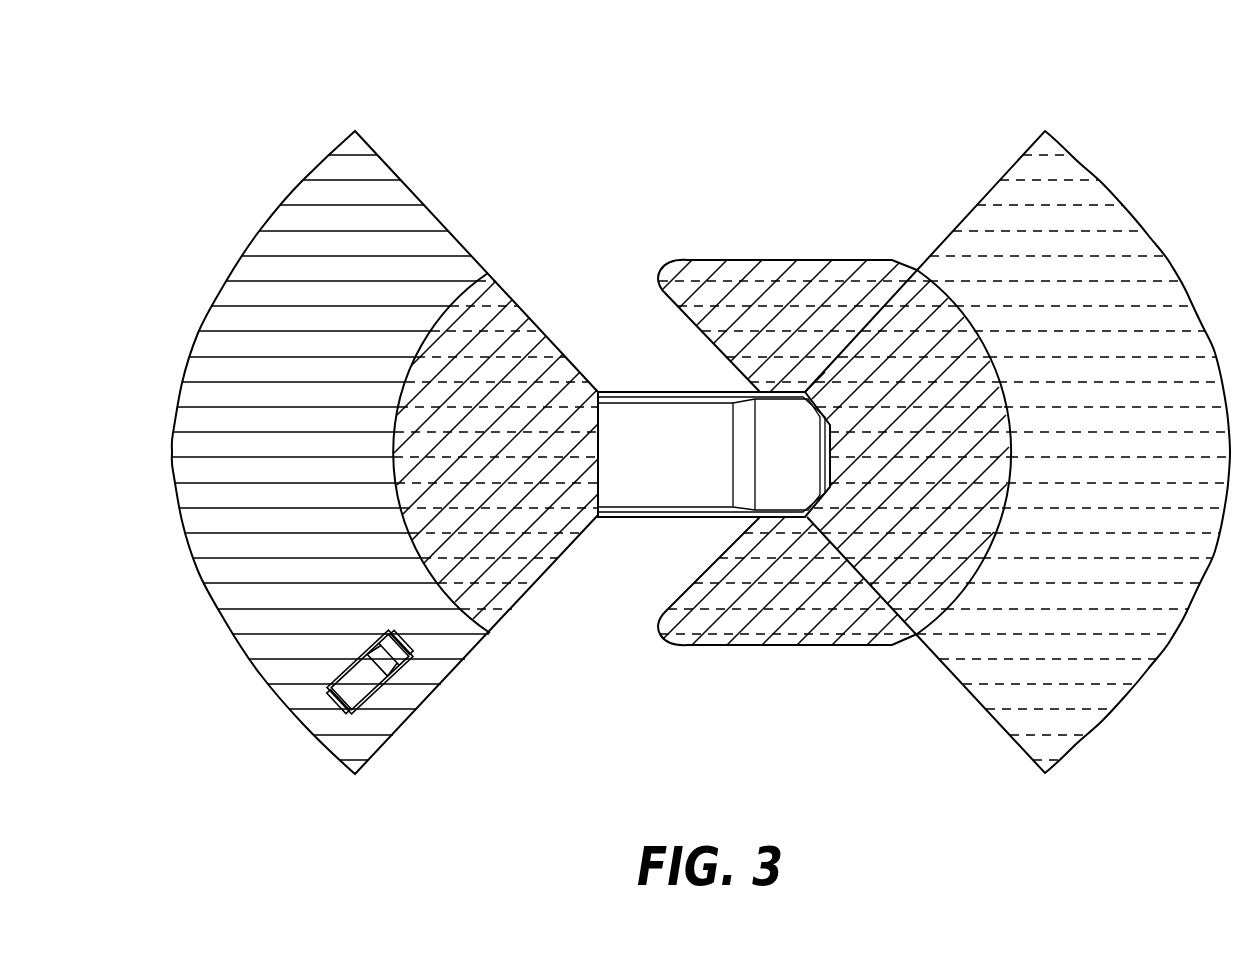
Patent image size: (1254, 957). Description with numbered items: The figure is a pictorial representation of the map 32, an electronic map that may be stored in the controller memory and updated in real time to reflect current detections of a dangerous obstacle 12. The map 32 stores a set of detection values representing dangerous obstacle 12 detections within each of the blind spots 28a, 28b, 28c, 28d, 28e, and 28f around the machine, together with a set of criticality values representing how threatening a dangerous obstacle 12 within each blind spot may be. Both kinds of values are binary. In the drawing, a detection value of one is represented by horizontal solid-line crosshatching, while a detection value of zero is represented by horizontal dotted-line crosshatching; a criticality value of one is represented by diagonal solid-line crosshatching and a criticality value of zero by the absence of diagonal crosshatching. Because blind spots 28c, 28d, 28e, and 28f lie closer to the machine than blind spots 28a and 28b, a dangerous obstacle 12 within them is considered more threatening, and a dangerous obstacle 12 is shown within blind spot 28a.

The map 32 is at (193, 102).
The dangerous obstacle 12 is at (337, 700).
The blind spot 28a is at (405, 702).
The blind spot 28b is at (1118, 220).
The blind spot 28c is at (515, 317).
The blind spot 28d is at (910, 300).
The blind spot 28e is at (803, 640).
The blind spot 28f is at (780, 282).